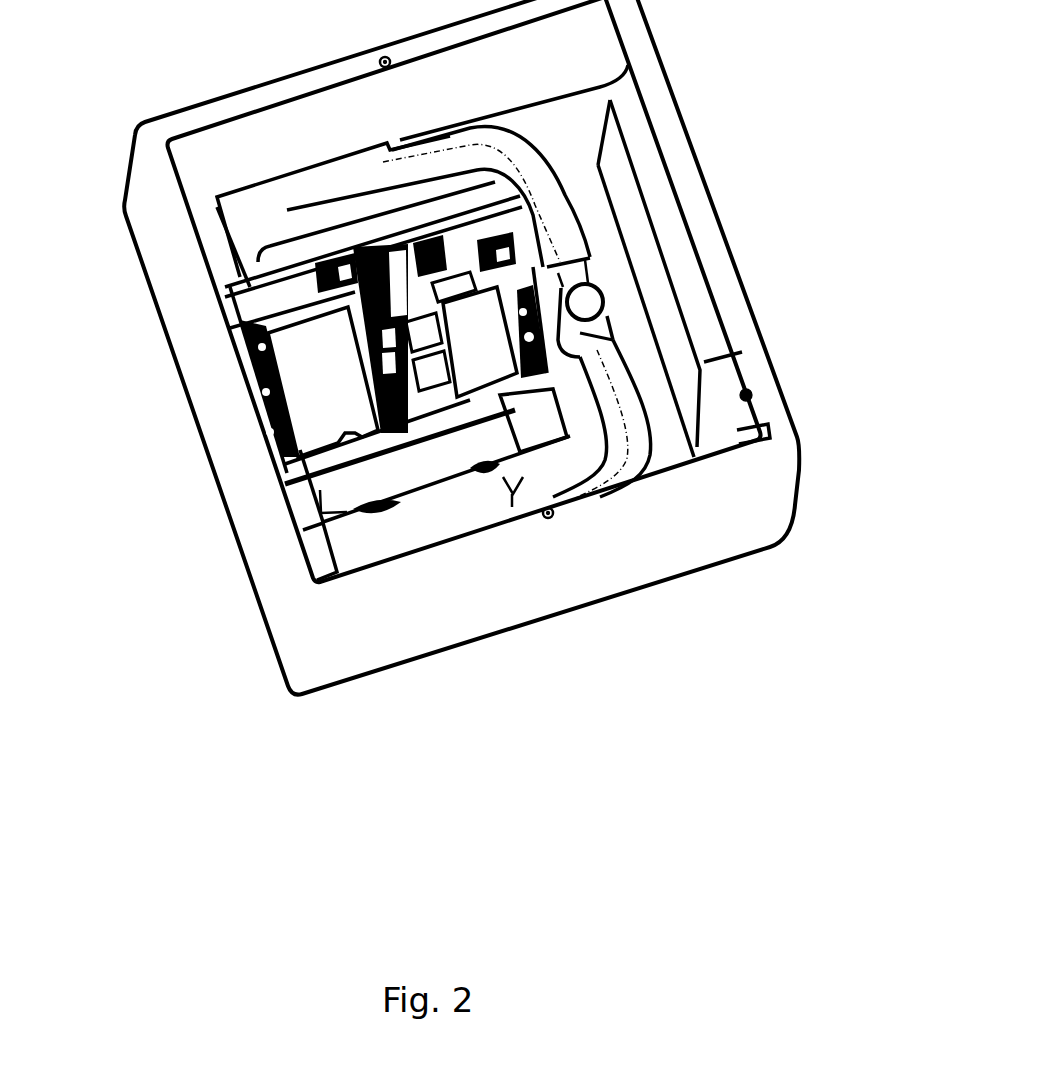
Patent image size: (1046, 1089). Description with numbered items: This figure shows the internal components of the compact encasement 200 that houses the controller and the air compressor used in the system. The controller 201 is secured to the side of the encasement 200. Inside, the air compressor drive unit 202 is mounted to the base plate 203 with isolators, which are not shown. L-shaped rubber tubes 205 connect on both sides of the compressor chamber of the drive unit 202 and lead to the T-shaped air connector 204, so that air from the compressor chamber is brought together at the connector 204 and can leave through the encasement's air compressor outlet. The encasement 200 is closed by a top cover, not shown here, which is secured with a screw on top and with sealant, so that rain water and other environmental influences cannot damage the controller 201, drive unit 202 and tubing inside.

The encasement 200 is at (138, 78).
The controller 201 is at (690, 247).
The air compressor drive unit 202 is at (243, 210).
The base plate 203 is at (670, 440).
The T-shaped air connector 204 is at (593, 300).
The L-shaped rubber tubes 205 is at (548, 180).